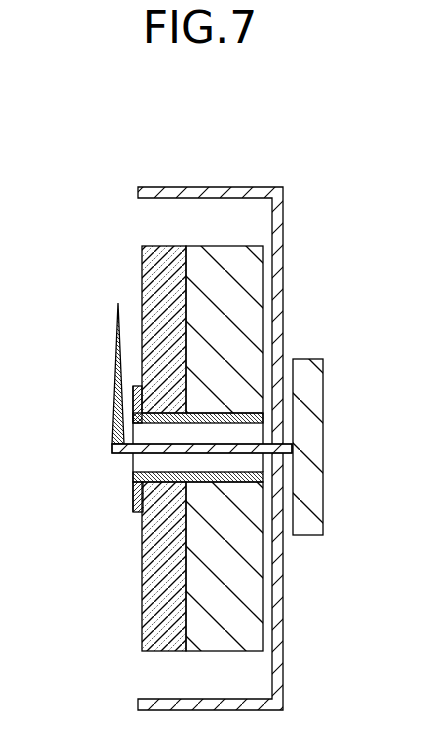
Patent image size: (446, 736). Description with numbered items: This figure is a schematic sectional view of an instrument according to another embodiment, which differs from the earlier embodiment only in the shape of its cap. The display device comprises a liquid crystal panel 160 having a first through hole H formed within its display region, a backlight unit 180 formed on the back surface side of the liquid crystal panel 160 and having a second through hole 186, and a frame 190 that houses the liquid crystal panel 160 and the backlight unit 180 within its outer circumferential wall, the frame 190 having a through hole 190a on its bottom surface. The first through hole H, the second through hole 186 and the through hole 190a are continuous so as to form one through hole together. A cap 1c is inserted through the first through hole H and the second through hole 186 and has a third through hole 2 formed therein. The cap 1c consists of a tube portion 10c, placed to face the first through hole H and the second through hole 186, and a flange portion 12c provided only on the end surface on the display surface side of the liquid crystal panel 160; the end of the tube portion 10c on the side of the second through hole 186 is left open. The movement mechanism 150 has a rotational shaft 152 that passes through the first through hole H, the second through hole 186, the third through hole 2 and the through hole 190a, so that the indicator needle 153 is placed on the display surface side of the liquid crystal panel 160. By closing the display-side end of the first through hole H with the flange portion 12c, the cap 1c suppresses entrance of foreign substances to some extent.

The frame 190 is at (283, 266).
The through hole 190a is at (278, 475).
The liquid crystal panel 160 is at (162, 232).
The backlight unit 180 is at (224, 232).
The cap 1c is at (137, 370).
The tube portion 10c is at (205, 477).
The flange portion 12c is at (138, 502).
The first through hole H is at (205, 475).
The indicator needle 153 is at (117, 368).
The rotational shaft 152 is at (115, 447).
The movement mechanism 150 is at (318, 408).
The third through hole 2 is at (253, 435).
The second through hole 186 is at (213, 480).